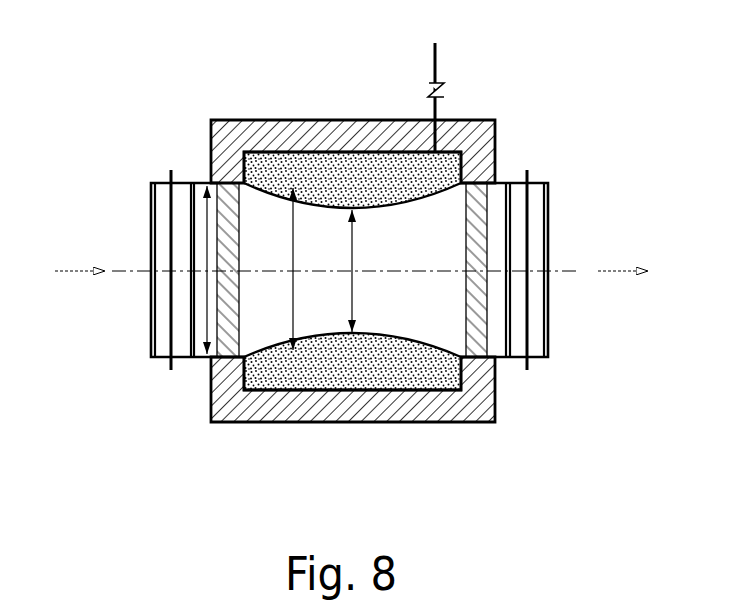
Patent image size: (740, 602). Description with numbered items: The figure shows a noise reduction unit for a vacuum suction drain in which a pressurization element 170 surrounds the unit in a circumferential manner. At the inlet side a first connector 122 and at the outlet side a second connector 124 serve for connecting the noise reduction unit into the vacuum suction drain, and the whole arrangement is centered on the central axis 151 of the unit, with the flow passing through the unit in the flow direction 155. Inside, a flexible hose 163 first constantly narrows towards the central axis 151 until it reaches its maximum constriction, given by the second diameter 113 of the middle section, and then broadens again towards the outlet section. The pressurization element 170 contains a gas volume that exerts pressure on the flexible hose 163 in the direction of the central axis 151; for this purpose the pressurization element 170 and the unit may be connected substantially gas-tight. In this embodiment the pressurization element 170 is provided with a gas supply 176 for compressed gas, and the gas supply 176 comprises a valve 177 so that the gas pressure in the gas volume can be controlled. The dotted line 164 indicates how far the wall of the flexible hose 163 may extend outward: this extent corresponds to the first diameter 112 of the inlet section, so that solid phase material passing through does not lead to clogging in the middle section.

The first diameter 112 is at (207, 300).
The second diameter 113 is at (340, 335).
The first connector 122 is at (171, 168).
The second connector 124 is at (527, 181).
The central axis 151 is at (143, 273).
The flow direction 155 is at (76, 266).
The flexible hose 163 is at (243, 360).
The dotted line 164 is at (272, 190).
The pressurization element 170 is at (258, 118).
The gas supply 176 is at (437, 60).
The valve 177 is at (426, 87).